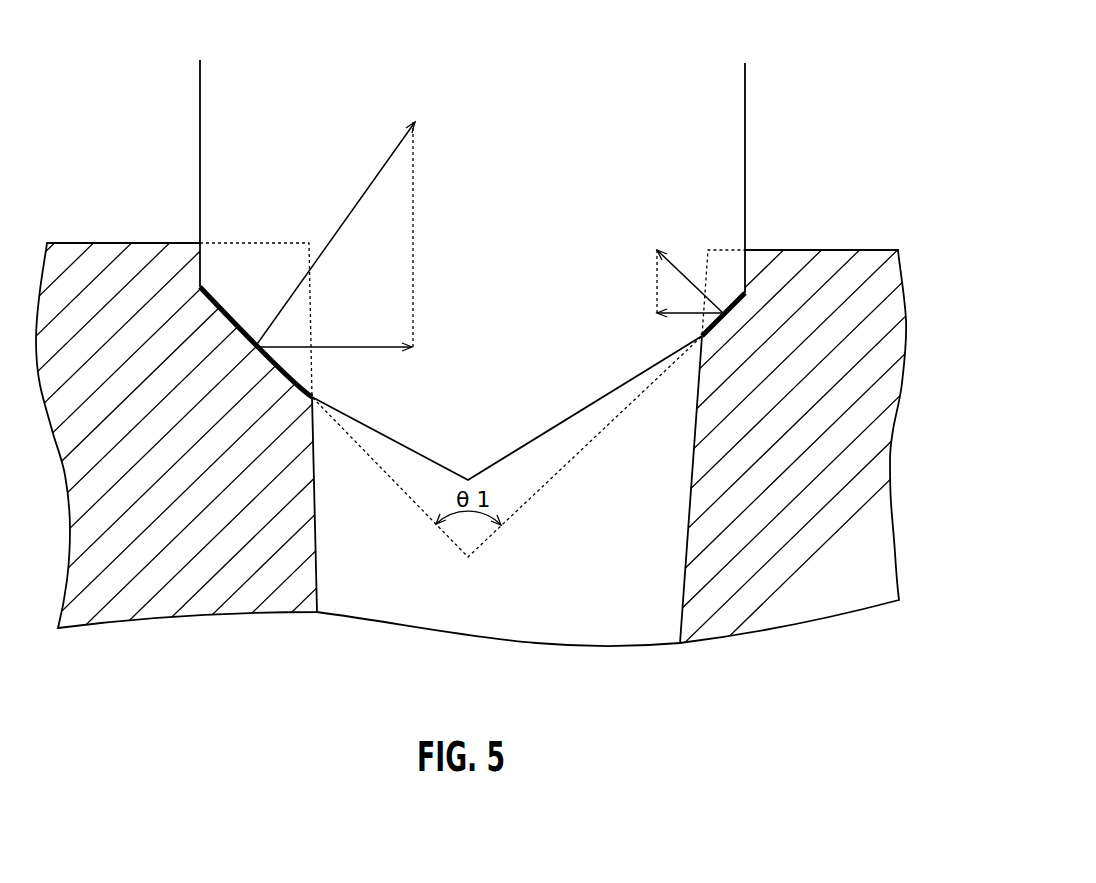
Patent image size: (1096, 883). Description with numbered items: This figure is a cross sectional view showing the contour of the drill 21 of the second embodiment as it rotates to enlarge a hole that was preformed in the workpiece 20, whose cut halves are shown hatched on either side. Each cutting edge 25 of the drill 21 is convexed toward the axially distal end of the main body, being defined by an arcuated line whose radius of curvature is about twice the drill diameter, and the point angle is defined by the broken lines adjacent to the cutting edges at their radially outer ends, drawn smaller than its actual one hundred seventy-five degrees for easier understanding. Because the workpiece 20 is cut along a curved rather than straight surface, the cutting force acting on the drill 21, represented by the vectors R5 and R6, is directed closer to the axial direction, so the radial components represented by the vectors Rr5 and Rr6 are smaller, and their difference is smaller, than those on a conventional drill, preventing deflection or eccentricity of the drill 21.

The workpiece 20 is at (112, 250).
The drill 21 is at (786, 113).
The cutting edge 25 is at (373, 433).
The vector R5 is at (353, 223).
The vector Rr5 is at (356, 346).
The vector R6 is at (668, 272).
The vector Rr6 is at (667, 312).